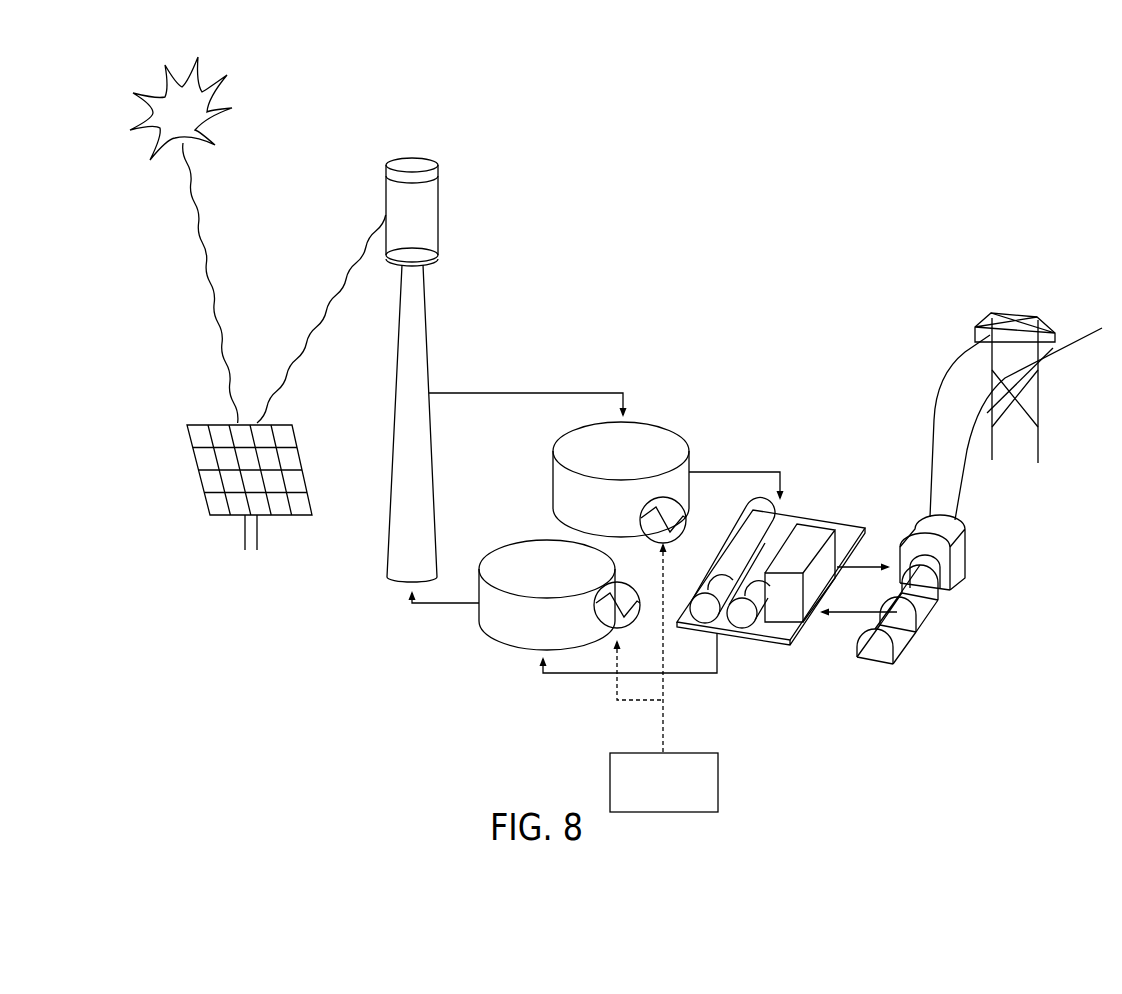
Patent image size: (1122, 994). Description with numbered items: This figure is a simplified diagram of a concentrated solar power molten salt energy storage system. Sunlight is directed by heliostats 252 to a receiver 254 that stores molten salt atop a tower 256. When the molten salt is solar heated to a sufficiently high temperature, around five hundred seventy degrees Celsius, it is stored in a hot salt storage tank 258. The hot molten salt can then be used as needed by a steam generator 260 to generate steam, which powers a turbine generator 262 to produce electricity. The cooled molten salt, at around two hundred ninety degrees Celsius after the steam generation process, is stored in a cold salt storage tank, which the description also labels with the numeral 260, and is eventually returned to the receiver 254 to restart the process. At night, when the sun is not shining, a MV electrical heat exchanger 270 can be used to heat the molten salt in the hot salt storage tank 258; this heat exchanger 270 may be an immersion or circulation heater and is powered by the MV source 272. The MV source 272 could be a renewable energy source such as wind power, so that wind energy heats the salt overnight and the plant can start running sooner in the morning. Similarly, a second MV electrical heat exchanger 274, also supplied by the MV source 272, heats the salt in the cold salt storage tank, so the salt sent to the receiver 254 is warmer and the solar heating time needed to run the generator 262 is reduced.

The heliostats 252 is at (202, 487).
The receiver 254 is at (437, 172).
The tower 256 is at (431, 378).
The hot salt storage tank 258 is at (667, 426).
The steam generator 260 is at (479, 632).
The turbine generator 262 is at (966, 556).
The MV electrical heat exchanger 270 is at (684, 506).
The MV source 272 is at (718, 782).
The MV electrical heat exchanger 274 is at (638, 594).